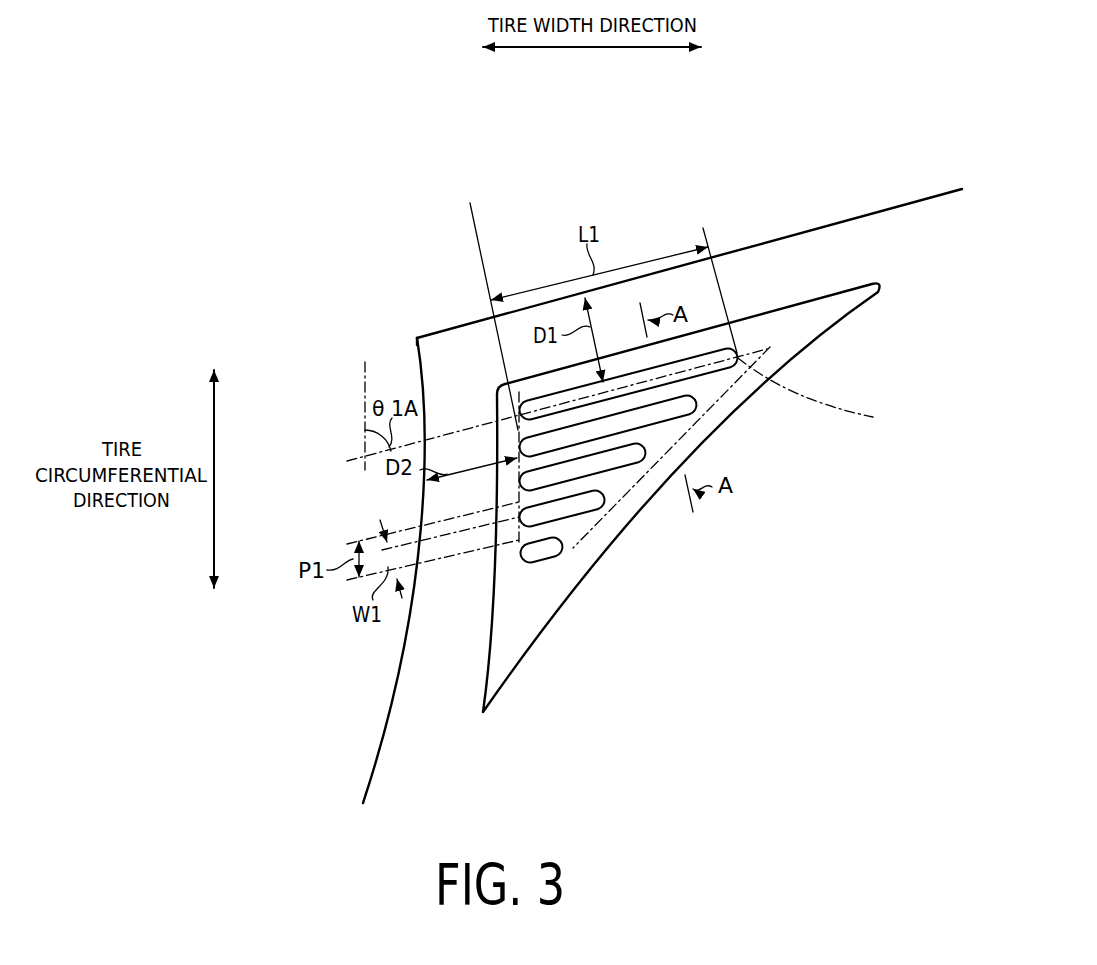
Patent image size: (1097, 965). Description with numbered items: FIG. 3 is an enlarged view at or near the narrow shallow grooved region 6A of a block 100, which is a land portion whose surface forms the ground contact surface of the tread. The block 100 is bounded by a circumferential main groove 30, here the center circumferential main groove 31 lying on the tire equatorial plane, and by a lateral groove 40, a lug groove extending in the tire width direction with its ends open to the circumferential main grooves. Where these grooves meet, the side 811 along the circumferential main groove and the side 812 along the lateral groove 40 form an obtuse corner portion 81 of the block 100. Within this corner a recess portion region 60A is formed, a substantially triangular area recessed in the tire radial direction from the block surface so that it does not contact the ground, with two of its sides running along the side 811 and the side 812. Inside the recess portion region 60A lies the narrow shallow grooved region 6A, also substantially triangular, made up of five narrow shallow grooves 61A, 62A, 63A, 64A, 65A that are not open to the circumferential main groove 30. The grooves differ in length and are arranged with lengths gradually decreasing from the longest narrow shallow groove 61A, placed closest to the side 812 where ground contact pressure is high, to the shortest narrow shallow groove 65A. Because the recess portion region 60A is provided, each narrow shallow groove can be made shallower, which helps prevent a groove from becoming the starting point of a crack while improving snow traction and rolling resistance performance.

The block 100 is at (761, 157).
The lateral groove 40 is at (428, 328).
The circumferential main groove 30 is at (369, 319).
The center circumferential main groove 31 is at (414, 337).
The obtuse corner portion 81 is at (440, 348).
The side 811 is at (417, 349).
The side 812 is at (485, 304).
The recess portion region 60A is at (808, 316).
The narrow shallow groove 61A is at (738, 359).
The narrow shallow groove 62A is at (700, 404).
The narrow shallow groove 63A is at (648, 457).
The narrow shallow groove 64A is at (607, 500).
The narrow shallow groove 65A is at (565, 551).
The narrow shallow grooved region 6A is at (630, 405).